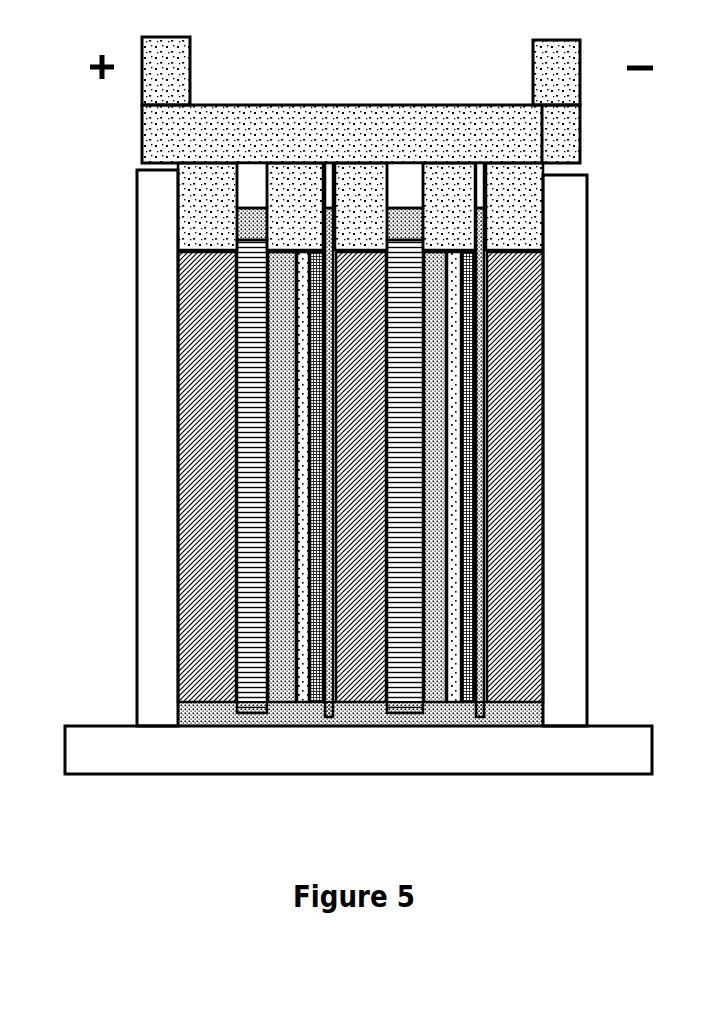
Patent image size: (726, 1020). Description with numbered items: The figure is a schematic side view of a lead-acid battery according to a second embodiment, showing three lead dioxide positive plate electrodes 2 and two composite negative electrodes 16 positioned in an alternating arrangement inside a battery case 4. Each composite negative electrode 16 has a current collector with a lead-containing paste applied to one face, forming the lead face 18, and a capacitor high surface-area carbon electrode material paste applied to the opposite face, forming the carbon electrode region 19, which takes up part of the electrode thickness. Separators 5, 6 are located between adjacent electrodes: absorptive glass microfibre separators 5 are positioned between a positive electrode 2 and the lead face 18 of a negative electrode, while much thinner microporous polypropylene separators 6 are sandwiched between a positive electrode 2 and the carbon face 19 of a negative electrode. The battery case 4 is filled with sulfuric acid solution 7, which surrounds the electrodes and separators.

The lead dioxide positive plate electrode 2 is at (360, 357).
The battery case 4 is at (562, 578).
The absorptive glass microfibre separator 5 is at (403, 617).
The microporous polypropylene separator 6 is at (335, 637).
The sulfuric acid solution 7 is at (197, 708).
The composite negative electrode 16 is at (302, 205).
The lead face of the negative electrode 18 is at (283, 452).
The carbon electrode region of the negative electrode 19 is at (322, 525).